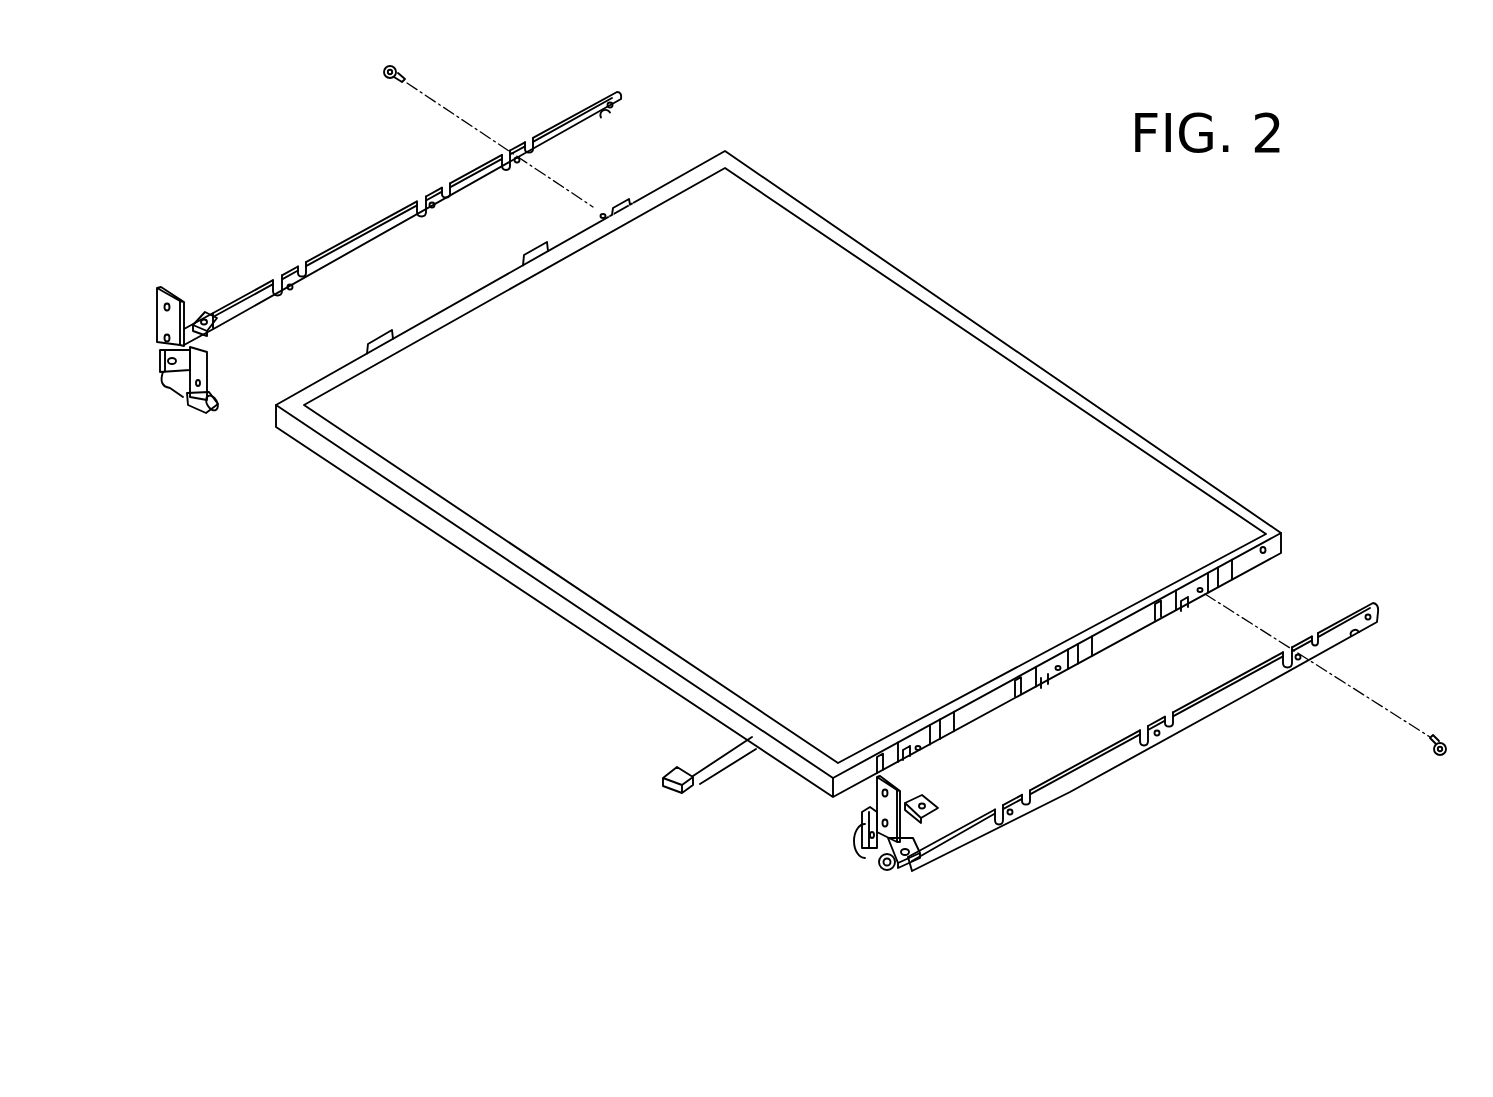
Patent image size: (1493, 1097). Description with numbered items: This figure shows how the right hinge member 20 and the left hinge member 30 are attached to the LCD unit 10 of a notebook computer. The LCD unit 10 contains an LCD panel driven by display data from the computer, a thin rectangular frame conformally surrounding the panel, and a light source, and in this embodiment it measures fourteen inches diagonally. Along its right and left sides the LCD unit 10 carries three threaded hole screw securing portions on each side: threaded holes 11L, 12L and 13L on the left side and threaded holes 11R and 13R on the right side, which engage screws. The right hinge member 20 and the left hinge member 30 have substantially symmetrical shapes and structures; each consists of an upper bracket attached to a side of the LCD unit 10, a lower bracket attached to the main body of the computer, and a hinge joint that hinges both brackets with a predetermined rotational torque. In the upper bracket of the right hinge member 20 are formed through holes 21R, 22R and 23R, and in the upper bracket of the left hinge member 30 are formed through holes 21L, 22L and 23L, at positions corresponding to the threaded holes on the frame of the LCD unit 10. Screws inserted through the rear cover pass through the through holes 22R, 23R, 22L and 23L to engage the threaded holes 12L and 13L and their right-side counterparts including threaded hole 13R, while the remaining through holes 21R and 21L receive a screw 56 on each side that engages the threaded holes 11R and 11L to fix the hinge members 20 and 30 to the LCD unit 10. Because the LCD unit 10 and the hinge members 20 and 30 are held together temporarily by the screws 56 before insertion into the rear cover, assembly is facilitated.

The LCD unit 10 is at (900, 332).
The threaded hole screw securing portion 11L is at (606, 202).
The threaded hole screw securing portion 12L is at (523, 250).
The threaded hole screw securing portion 13L is at (368, 340).
The threaded hole screw securing portion 11R is at (1210, 590).
The threaded hole screw securing portion 13R is at (925, 745).
The right hinge member 20 is at (1090, 777).
The through hole 21R is at (1296, 660).
The through hole 22R is at (1158, 736).
The through hole 23R is at (1012, 814).
The left hinge member 30 is at (330, 247).
The through hole 21L is at (517, 150).
The through hole 22L is at (425, 197).
The through hole 23L is at (278, 280).
The screw 56 is at (382, 71).